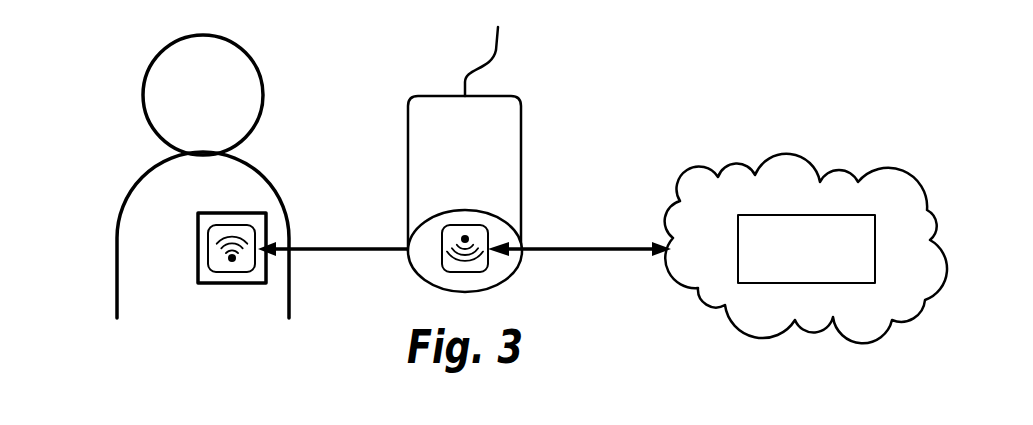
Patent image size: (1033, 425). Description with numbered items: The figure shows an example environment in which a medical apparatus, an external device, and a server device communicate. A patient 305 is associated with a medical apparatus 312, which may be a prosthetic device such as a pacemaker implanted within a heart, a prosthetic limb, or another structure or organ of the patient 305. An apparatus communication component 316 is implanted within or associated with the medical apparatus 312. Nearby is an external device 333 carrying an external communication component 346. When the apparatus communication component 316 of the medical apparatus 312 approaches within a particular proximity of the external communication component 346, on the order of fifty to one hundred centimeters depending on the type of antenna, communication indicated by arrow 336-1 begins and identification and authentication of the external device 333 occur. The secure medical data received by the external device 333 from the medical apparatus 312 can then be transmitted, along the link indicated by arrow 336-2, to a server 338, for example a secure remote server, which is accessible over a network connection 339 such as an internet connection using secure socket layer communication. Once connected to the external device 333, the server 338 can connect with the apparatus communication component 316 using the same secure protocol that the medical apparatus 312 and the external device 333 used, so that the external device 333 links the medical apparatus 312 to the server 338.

The patient 305 is at (106, 138).
The medical apparatus 312 is at (197, 237).
The apparatus communication component 316 is at (248, 264).
The external device 333 is at (509, 135).
The external communication component 346 is at (482, 265).
The arrow indicating communication 336-1 is at (342, 245).
The communication link to network 336-2 is at (588, 245).
The network connection 339 is at (840, 182).
The server 338 is at (812, 270).